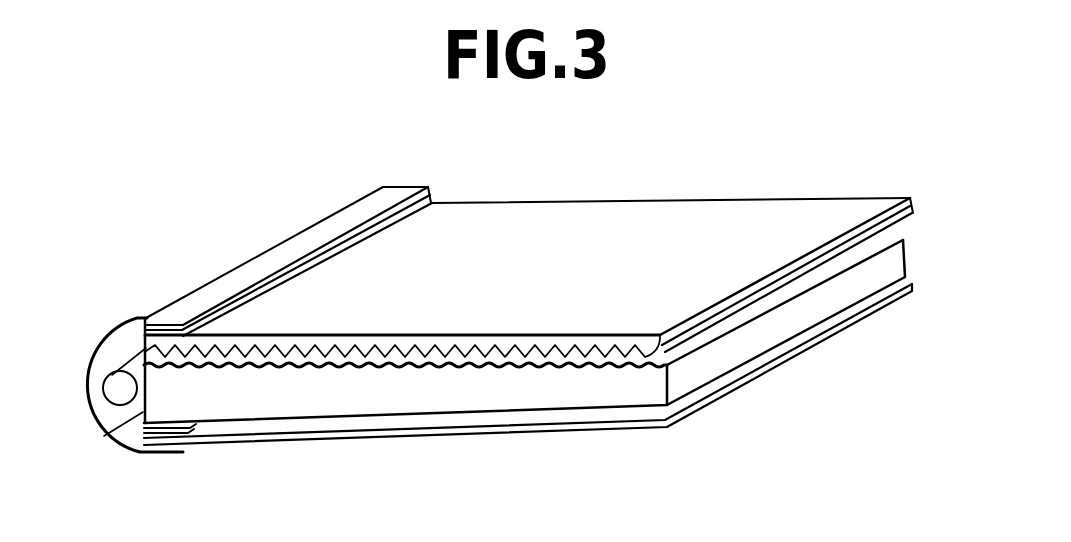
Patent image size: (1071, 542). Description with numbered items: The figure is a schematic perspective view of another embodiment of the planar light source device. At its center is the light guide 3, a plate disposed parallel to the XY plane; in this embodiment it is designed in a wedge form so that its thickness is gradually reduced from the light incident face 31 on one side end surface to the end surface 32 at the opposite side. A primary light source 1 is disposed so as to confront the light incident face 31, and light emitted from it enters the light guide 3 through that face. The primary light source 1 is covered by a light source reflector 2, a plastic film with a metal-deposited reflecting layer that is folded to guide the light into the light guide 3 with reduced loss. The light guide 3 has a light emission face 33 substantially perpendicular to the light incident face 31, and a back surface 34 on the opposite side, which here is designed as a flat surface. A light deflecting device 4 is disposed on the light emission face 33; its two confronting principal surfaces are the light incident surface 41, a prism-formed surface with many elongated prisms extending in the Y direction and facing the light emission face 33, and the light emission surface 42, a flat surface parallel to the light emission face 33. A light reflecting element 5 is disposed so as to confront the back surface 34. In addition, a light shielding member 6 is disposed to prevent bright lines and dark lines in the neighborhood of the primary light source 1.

The primary light source 1 is at (117, 388).
The light source reflector 2 is at (110, 332).
The light guide 3 is at (535, 361).
The light incident face 31 is at (109, 440).
The end surface 32 is at (837, 292).
The light emission face 33 is at (737, 317).
The back surface 34 is at (507, 412).
The light deflecting device 4 is at (561, 248).
The light incident surface 41 is at (907, 214).
The light emission surface 42 is at (641, 200).
The light reflecting element 5 is at (610, 430).
The light shielding member 6 is at (210, 306).